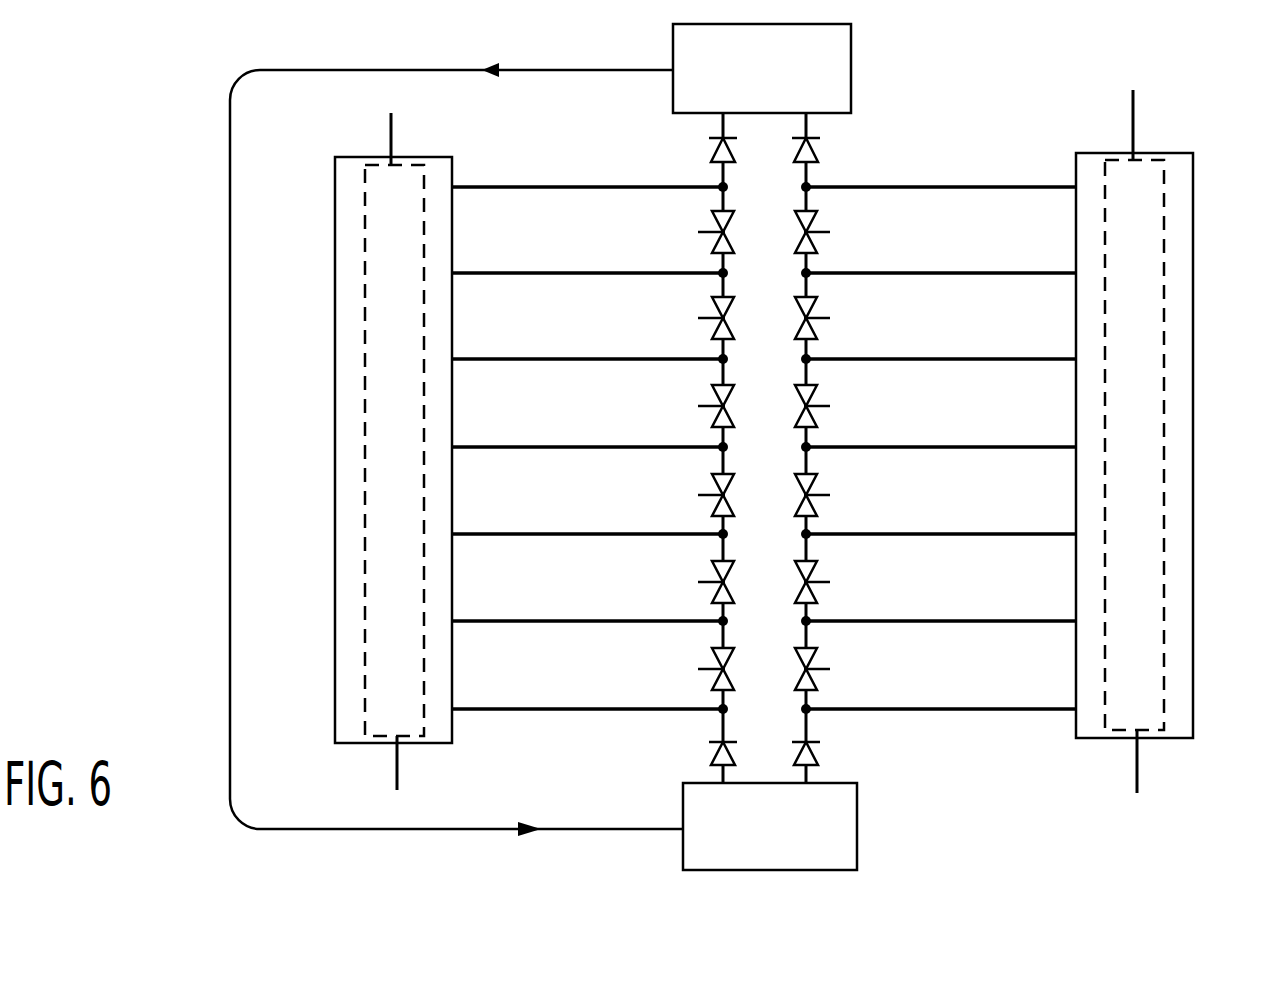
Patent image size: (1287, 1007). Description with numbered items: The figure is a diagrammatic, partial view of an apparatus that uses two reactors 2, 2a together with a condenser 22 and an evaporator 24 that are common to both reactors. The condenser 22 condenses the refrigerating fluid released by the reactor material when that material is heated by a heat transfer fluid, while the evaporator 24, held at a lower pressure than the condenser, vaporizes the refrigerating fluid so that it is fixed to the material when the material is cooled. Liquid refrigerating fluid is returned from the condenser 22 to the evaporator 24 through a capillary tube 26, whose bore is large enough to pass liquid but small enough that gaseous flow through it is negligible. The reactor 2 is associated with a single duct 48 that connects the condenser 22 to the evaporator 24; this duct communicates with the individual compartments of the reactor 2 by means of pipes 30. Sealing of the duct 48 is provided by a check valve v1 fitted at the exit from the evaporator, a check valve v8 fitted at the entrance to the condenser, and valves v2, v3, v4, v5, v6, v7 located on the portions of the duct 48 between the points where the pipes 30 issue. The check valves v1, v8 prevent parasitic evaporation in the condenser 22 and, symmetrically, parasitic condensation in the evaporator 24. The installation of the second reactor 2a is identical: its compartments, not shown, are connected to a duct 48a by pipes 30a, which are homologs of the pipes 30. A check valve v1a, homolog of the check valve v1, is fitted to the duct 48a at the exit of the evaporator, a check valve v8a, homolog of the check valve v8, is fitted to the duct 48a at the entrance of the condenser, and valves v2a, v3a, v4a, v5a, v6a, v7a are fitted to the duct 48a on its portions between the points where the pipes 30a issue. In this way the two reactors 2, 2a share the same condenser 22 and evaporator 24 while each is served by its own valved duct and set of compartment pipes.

The condenser 22 is at (838, 42).
The evaporator 24 is at (838, 825).
The capillary tube 26 is at (230, 378).
The reactor 2 is at (1210, 172).
The reactor 2a is at (318, 180).
The pipes 30 is at (1035, 272).
The pipes 30a is at (517, 273).
The duct 48 is at (806, 372).
The duct 48a is at (780, 440).
The check valve v1 is at (817, 752).
The valve v2 is at (816, 663).
The valve v3 is at (816, 576).
The valve v4 is at (816, 489).
The valve v5 is at (816, 400).
The valve v6 is at (816, 312).
The valve v7 is at (816, 226).
The check valve v8 is at (817, 155).
The check valve v1a is at (713, 753).
The valve v2a is at (713, 662).
The valve v3a is at (713, 575).
The valve v4a is at (713, 488).
The valve v5a is at (713, 399).
The valve v6a is at (713, 311).
The valve v7a is at (713, 225).
The check valve v8a is at (712, 152).